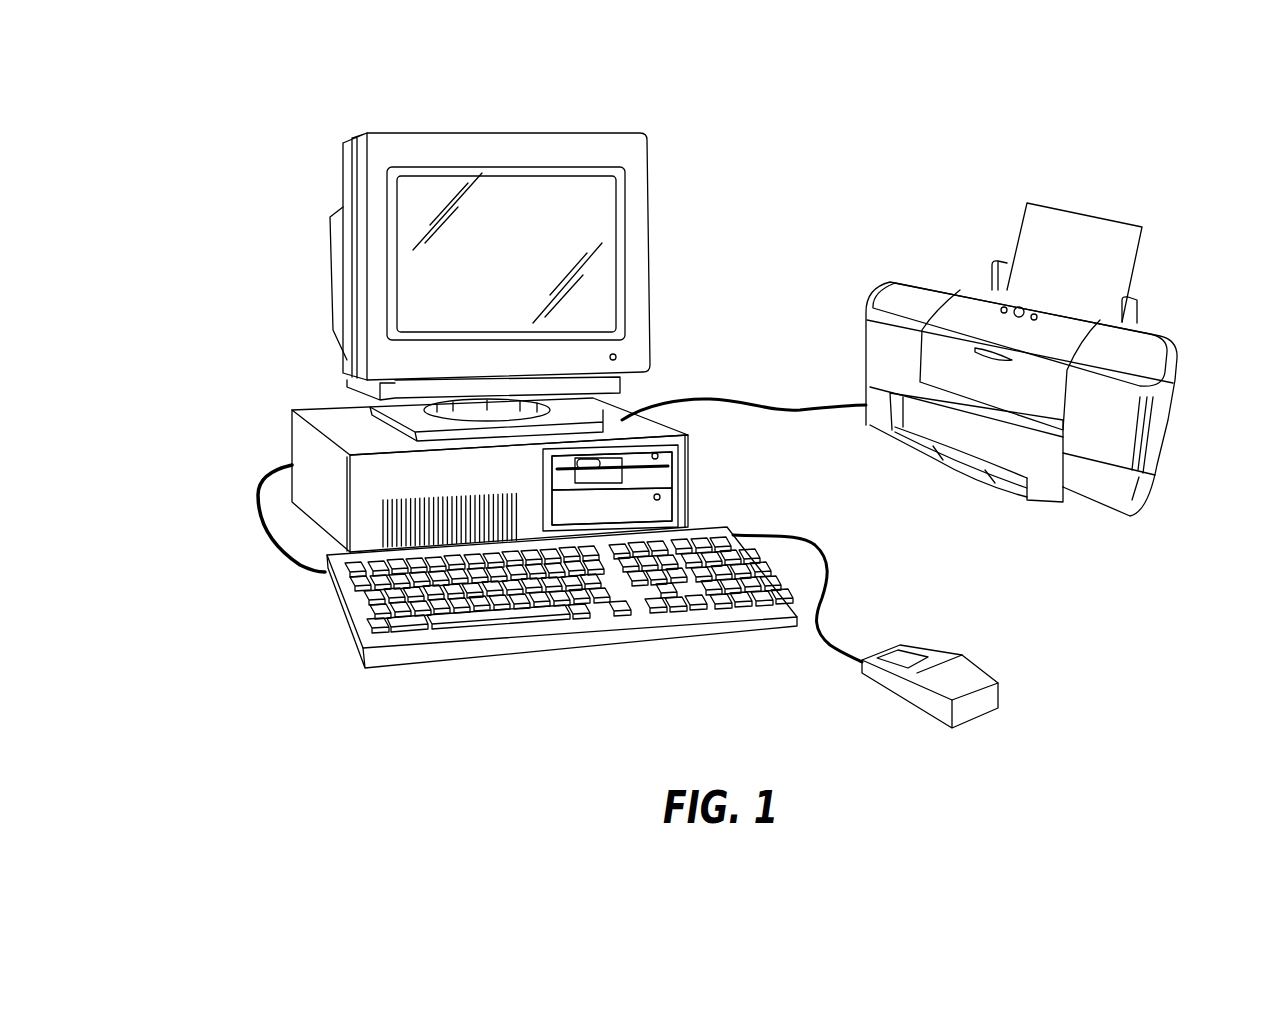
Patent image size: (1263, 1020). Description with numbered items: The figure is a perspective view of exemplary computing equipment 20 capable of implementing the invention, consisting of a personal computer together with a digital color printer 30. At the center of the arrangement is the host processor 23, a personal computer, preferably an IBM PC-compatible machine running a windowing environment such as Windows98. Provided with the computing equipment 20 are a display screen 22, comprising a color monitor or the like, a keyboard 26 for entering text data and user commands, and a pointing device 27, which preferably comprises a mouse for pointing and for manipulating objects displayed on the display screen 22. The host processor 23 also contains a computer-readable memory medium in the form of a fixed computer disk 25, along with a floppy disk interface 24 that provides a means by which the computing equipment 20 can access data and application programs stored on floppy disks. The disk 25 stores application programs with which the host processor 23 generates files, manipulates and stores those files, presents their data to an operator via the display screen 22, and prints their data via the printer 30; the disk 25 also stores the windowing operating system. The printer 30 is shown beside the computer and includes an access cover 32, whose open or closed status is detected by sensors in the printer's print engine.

The computing equipment 20 is at (610, 104).
The display screen 22 is at (583, 303).
The host processor 23 is at (500, 132).
The floppy disk interface 24 is at (663, 480).
The fixed computer disk 25 is at (663, 510).
The keyboard 26 is at (677, 616).
The pointing device 27 is at (970, 672).
The printer 30 is at (855, 302).
The access cover 32 is at (1040, 400).